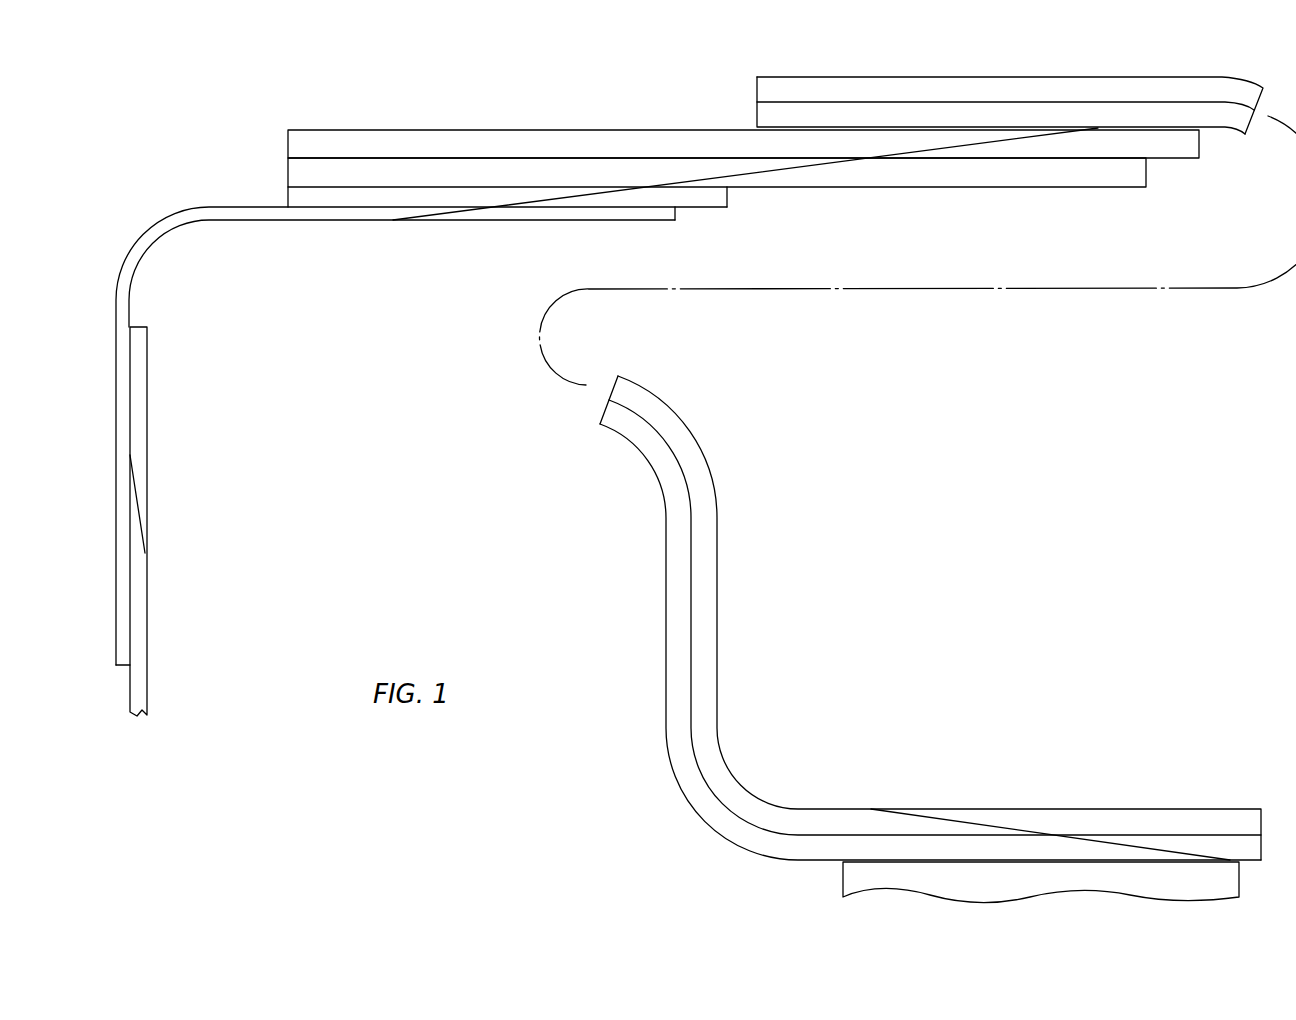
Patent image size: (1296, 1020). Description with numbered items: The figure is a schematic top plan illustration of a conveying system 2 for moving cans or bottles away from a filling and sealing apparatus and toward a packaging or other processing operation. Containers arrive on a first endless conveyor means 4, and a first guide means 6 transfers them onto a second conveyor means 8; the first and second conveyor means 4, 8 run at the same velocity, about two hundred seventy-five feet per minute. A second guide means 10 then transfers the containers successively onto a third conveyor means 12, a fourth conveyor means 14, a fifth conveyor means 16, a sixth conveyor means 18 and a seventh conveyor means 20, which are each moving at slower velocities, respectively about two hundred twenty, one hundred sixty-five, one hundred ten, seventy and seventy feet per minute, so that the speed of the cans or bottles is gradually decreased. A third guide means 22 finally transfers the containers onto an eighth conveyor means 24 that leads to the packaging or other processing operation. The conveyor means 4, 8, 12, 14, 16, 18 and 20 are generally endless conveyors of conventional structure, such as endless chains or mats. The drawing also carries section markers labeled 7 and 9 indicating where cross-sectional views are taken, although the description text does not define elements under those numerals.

The conveying system 2 is at (985, 474).
The first endless conveyor means 4 is at (145, 213).
The first guide means 6 is at (147, 490).
The section line 7- 7 is at (525, 105).
The second conveyor means 8 is at (200, 222).
The section line 9- 9 is at (838, 782).
The second guide means 10 is at (597, 195).
The third conveyor means 12 is at (360, 200).
The fourth conveyor means 14 is at (580, 170).
The fifth conveyor means 16 is at (688, 145).
The sixth conveyor means 18 is at (855, 112).
The seventh conveyor means 20 is at (935, 93).
The third guide means 22 is at (1010, 826).
The eighth conveyor means 24 is at (1227, 878).